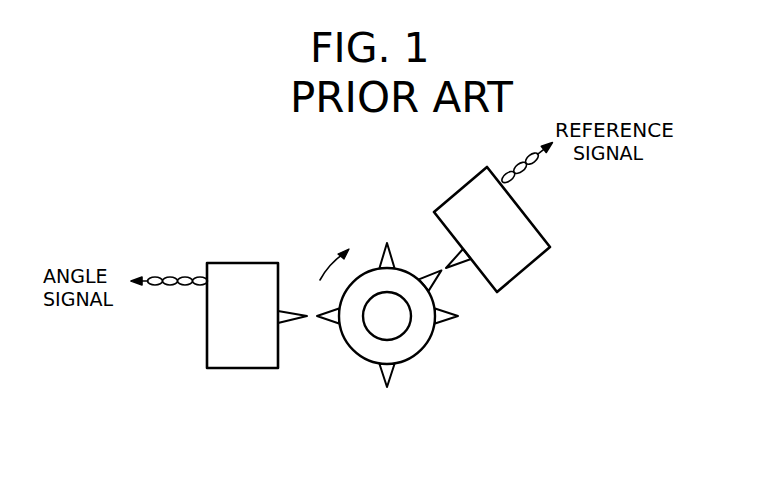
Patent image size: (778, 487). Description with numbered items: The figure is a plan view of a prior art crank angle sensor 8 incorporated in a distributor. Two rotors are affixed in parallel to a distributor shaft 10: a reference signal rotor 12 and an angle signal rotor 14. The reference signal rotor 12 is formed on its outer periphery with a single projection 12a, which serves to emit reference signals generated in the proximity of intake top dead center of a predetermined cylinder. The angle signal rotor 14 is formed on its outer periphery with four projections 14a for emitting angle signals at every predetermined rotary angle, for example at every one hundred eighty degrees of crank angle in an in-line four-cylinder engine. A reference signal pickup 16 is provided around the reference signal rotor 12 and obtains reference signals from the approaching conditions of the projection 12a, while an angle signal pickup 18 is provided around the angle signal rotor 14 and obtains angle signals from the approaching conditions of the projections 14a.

The crank angle sensor 8 is at (316, 220).
The distributor shaft 10 is at (370, 333).
The reference signal rotor 12 is at (423, 346).
The projection 12a is at (431, 282).
The angle signal rotor 14 is at (390, 382).
The projections 14a is at (327, 320).
The reference signal pickup 16 is at (539, 228).
The angle signal pickup 18 is at (238, 369).